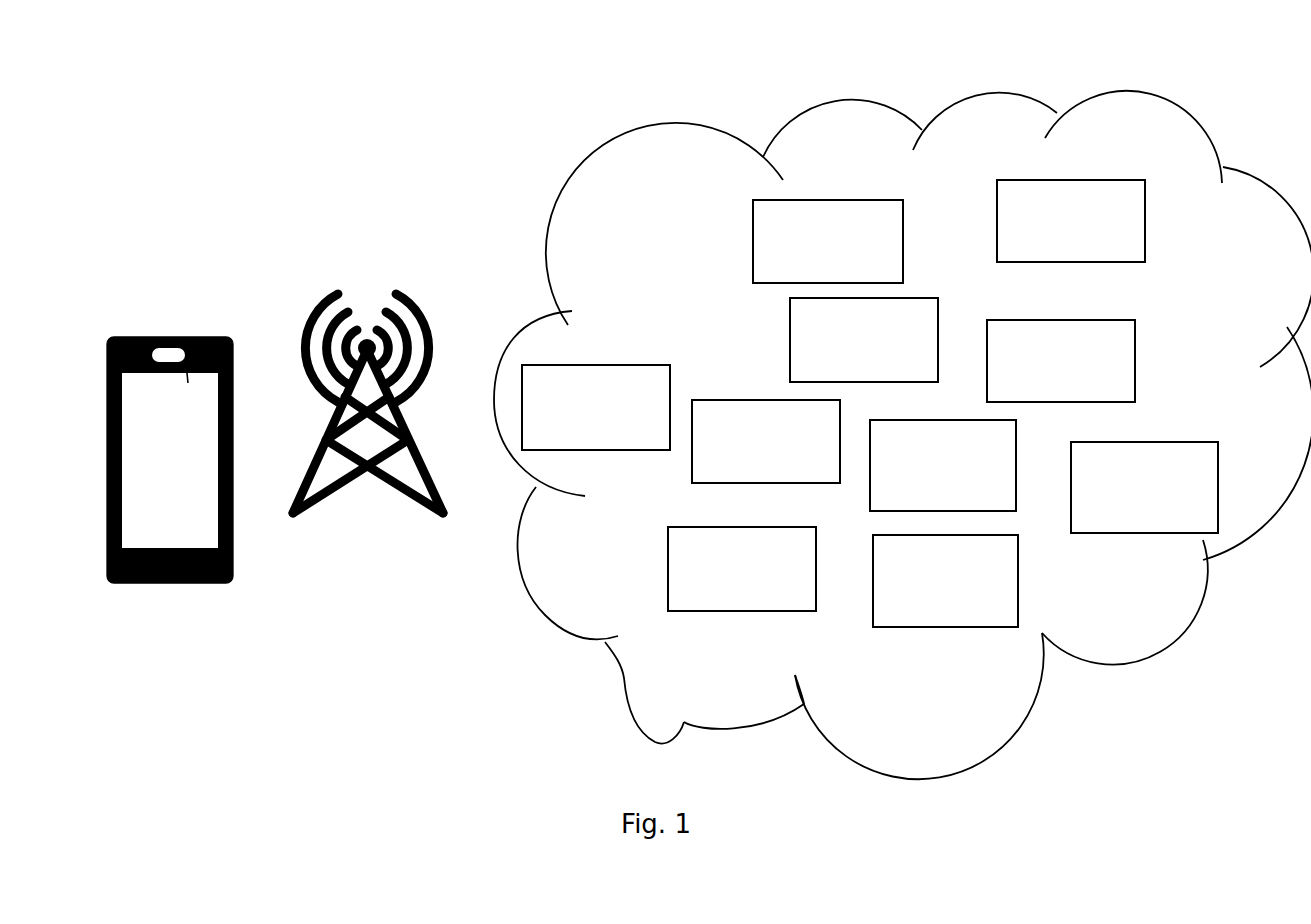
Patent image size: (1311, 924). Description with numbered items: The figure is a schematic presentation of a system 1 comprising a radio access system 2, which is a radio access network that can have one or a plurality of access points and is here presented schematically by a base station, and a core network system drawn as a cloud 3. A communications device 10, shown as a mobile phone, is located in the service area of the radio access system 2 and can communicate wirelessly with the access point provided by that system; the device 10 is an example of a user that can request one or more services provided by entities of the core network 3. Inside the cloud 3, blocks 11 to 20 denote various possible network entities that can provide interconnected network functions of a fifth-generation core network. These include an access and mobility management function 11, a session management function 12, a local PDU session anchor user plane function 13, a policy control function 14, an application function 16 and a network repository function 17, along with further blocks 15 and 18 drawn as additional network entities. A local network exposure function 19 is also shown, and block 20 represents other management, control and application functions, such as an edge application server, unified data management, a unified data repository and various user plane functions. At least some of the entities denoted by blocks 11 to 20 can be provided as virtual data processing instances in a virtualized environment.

The system 1 is at (413, 117).
The radio access system 2 is at (364, 337).
The core network 3 is at (673, 137).
The communications device 10 is at (168, 337).
The access and mobility management function 11 is at (568, 365).
The session management function 12 is at (751, 397).
The local PDU session anchor user plane function 13 is at (816, 595).
The policy control function 14 is at (1016, 512).
The network node 15 is at (1062, 353).
The application function 16 is at (1063, 215).
The network repository function 17 is at (830, 257).
The network node 18 is at (845, 348).
The local network exposure function 19 is at (925, 627).
The other management, control and application functions 20 is at (1118, 533).